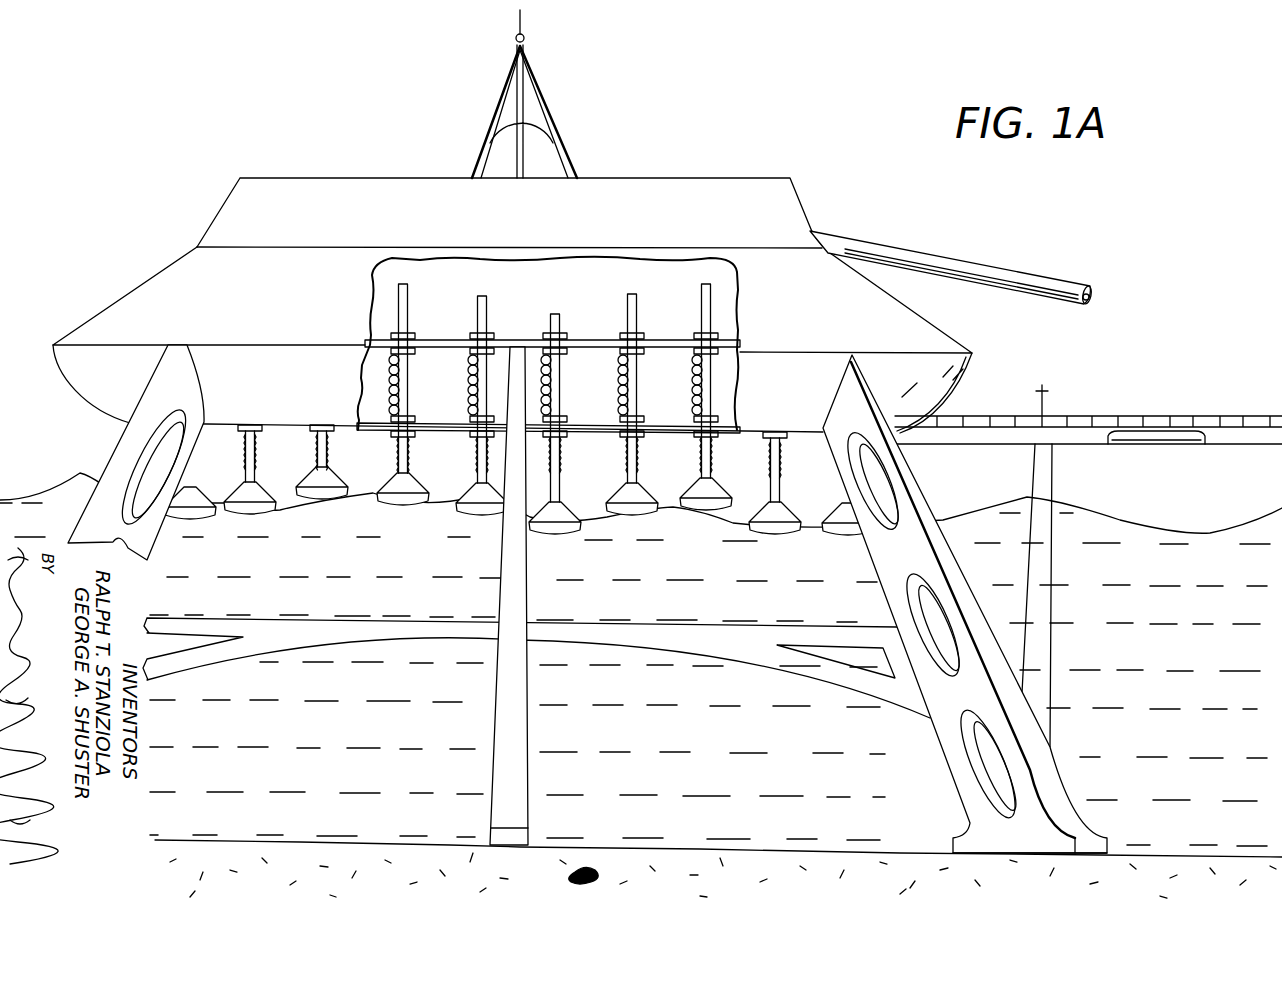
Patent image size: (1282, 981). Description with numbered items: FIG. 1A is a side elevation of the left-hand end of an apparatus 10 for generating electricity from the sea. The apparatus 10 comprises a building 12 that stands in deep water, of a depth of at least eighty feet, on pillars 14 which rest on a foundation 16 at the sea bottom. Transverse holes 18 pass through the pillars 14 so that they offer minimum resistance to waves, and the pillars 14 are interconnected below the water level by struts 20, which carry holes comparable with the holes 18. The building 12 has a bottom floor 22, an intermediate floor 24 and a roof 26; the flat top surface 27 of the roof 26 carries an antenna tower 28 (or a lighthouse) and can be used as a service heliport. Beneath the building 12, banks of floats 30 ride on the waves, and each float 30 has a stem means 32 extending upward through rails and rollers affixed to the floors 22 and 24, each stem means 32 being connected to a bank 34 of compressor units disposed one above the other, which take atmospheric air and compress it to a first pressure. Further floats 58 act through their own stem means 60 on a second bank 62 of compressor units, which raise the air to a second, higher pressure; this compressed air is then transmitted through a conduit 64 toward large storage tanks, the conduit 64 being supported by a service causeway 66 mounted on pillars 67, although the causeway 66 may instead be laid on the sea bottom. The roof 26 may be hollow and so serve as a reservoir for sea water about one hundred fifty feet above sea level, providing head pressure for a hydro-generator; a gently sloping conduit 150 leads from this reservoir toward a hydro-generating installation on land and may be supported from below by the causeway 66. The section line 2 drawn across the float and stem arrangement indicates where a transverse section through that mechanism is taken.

The apparatus for generating electricity 10 is at (512, 283).
The building 12 is at (290, 391).
The pillars 14 is at (587, 601).
The foundation 16 is at (948, 858).
The transverse holes 18 is at (983, 773).
The struts 20 is at (752, 655).
The bottom floor 22 is at (360, 418).
The intermediate floor 24 is at (365, 335).
The roof 26 is at (560, 231).
The flat top surface 27 is at (373, 178).
The antenna tower 28 is at (557, 138).
The floats 30 is at (400, 508).
The stem means 32 is at (409, 313).
The banks of compressor units 34 is at (380, 377).
The floats 58 is at (688, 503).
The stem means 60 is at (738, 373).
The bank of compressor units 62 is at (680, 392).
The conduit 64 is at (1165, 442).
The service causeway 66 is at (1245, 399).
The pillars 67 is at (1045, 483).
The conduit 150 is at (998, 270).
The section line 2 is at (556, 300).